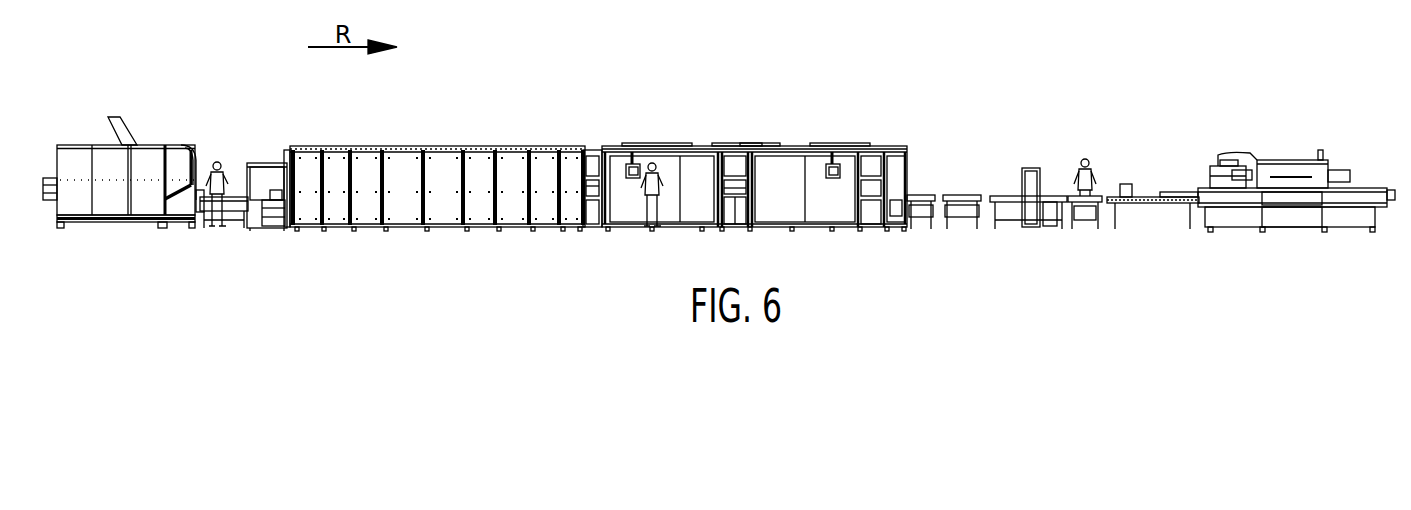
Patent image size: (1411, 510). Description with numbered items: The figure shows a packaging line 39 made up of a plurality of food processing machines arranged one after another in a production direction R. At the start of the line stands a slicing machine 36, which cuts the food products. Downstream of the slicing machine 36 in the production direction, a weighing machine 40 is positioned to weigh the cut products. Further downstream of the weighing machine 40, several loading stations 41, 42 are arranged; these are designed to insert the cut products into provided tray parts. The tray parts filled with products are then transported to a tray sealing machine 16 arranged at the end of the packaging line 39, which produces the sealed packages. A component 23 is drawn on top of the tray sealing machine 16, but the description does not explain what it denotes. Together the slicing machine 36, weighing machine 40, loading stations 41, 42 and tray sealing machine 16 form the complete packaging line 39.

The packaging line 39 is at (569, 73).
The slicing machine 36 is at (159, 124).
The weighing machine 40 is at (249, 140).
The loading station 41 is at (492, 138).
The loading station 42 is at (670, 134).
The handling device 23 is at (1218, 160).
The tray sealing machine 16 is at (1279, 147).